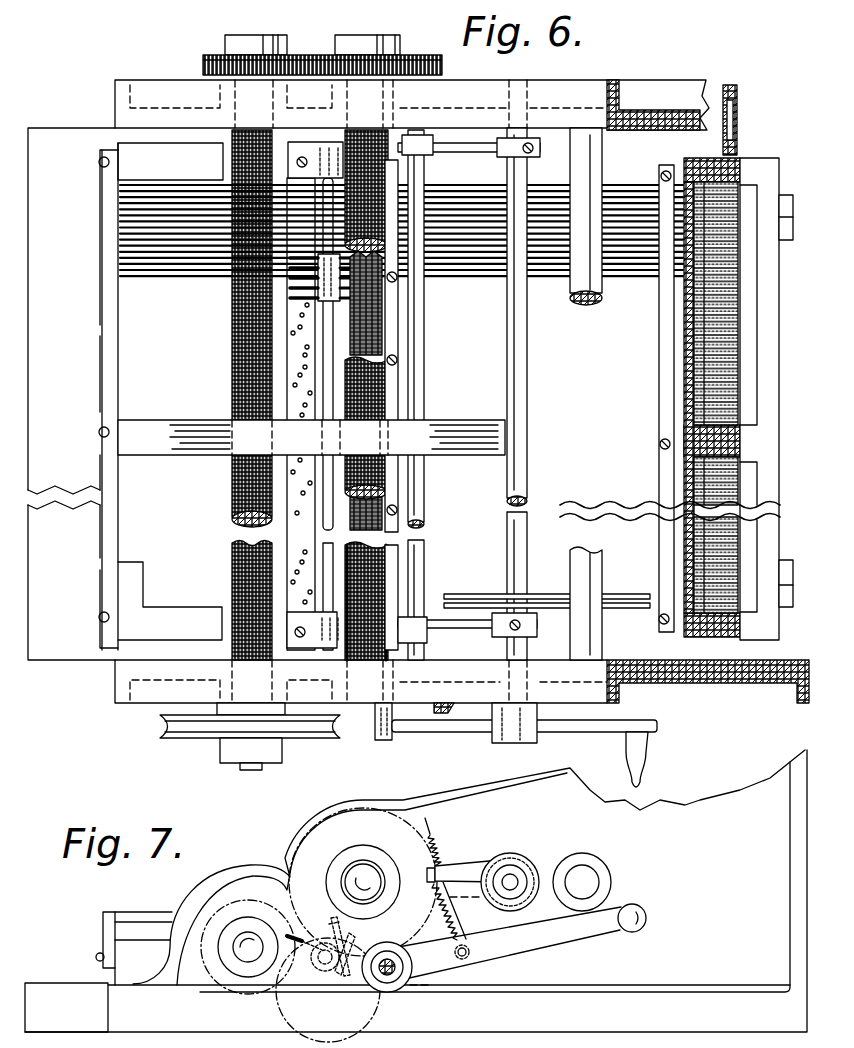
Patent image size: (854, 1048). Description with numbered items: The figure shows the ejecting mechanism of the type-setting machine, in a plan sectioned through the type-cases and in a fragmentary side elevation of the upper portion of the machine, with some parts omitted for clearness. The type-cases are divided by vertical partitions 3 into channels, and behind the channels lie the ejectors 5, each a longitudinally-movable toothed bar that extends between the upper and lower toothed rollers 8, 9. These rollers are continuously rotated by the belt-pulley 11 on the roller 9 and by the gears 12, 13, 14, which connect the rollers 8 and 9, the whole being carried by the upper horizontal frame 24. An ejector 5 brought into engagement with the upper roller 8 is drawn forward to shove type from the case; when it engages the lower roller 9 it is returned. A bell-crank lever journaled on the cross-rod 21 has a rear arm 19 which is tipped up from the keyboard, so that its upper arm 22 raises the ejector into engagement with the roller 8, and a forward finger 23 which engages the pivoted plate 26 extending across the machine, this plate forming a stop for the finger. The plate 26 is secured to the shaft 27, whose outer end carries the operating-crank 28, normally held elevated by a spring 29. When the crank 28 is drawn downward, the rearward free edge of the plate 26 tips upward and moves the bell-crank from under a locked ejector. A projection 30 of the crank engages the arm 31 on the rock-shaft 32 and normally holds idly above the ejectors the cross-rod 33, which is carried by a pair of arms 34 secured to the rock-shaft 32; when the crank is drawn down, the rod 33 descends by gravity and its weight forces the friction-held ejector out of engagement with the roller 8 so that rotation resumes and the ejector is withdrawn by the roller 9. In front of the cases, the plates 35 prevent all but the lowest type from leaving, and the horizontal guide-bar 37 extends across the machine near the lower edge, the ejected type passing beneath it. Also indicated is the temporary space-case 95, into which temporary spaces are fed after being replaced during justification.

In FIG. 6, the vertical partition 3 is at (740, 273).
In FIG. 6, the ejector 5 is at (640, 272).
In FIG. 7, the ejector 5 is at (166, 912).
In FIG. 6, the upper toothed roller 8 is at (388, 567).
In FIG. 6, the lower toothed roller 9 is at (235, 495).
In FIG. 6, the belt-pulley 11 is at (320, 740).
In FIG. 6, the gear 12 is at (237, 45).
In FIG. 7, the gear 12 is at (248, 954).
In FIG. 6, the gear 13 is at (322, 55).
In FIG. 7, the gear 13 is at (282, 1016).
In FIG. 6, the gear 14 is at (387, 45).
In FIG. 7, the gear 14 is at (293, 878).
In FIG. 6, the rear arm of bell-crank lever 19 is at (300, 300).
In FIG. 7, the rear arm of bell-crank lever 19 is at (315, 964).
In FIG. 6, the cross-rod 21 is at (330, 334).
In FIG. 6, the upper arm of bell-crank lever 22 is at (335, 297).
In FIG. 7, the upper arm of bell-crank lever 22 is at (341, 946).
In FIG. 6, the forward finger 23 is at (365, 312).
In FIG. 7, the forward finger 23 is at (331, 954).
In FIG. 6, the upper horizontal frame 24 is at (317, 394).
In FIG. 7, the upper horizontal frame 24 is at (416, 891).
In FIG. 6, the pivoted plate 26 is at (352, 334).
In FIG. 7, the pivoted plate 26 is at (356, 982).
In FIG. 6, the shaft 27 is at (398, 336).
In FIG. 6, the operating-crank 28 is at (568, 726).
In FIG. 7, the operating-crank 28 is at (555, 938).
In FIG. 6, the spring 29 is at (445, 714).
In FIG. 7, the spring 29 is at (439, 852).
In FIG. 7, the projection of the crank 30 is at (462, 917).
In FIG. 6, the arm 31 is at (476, 724).
In FIG. 7, the arm 31 is at (487, 862).
In FIG. 6, the rock-shaft 32 is at (507, 344).
In FIG. 6, the cross-rod 33 is at (420, 377).
In FIG. 6, the arms 34 is at (469, 393).
In FIG. 6, the plate 35 is at (745, 322).
In FIG. 6, the horizontal guide-bar 37 is at (760, 376).
In FIG. 6, the temporary space-case 95 is at (738, 88).